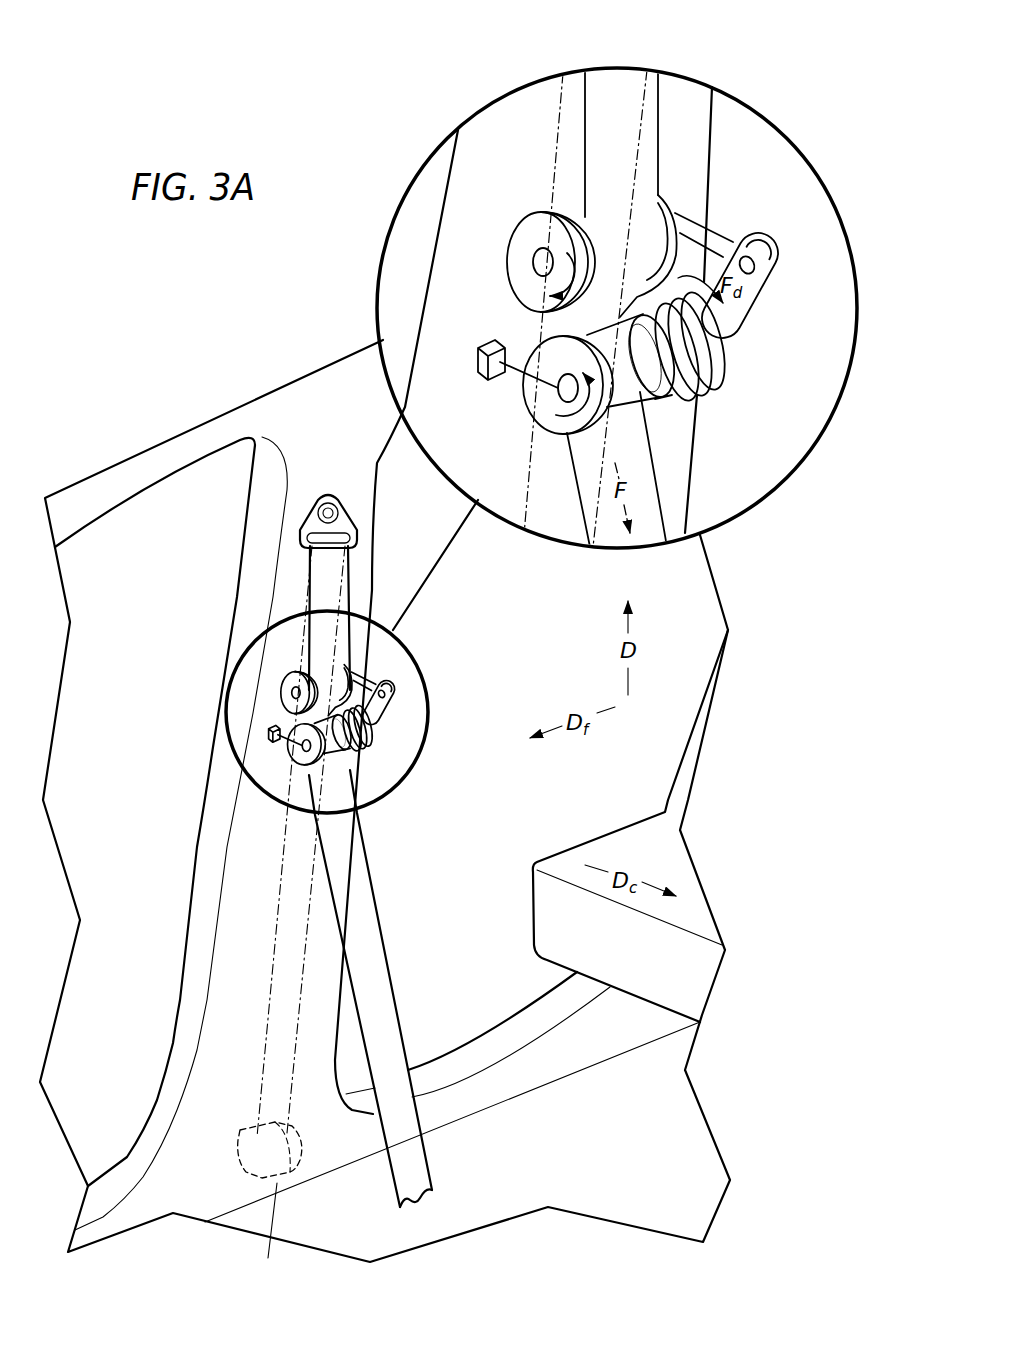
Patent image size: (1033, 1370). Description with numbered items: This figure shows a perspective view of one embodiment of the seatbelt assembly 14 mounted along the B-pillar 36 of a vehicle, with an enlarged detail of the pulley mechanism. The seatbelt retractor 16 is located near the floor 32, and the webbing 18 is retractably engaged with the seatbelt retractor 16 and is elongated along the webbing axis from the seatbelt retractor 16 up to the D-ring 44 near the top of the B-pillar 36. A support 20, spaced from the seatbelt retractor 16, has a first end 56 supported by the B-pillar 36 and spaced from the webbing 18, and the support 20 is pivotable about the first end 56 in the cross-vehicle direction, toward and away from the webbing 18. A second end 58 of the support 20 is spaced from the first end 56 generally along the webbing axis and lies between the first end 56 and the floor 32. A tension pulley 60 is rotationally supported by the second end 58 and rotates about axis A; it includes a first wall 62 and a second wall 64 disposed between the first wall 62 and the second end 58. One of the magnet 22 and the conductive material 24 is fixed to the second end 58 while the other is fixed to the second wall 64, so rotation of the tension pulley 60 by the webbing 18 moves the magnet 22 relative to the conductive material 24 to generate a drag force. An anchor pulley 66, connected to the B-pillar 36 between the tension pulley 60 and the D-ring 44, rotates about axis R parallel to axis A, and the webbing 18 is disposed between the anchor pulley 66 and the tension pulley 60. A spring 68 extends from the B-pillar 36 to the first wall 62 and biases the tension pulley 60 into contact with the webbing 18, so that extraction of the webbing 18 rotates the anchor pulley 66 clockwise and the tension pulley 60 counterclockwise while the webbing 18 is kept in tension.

The seatbelt assembly 14 is at (397, 574).
The seatbelt retractor 16 is at (293, 1173).
The webbing 18 is at (377, 982).
The support 20 is at (753, 230).
The magnet 22 is at (697, 397).
The conductive material 24 is at (720, 368).
The floor 32 is at (510, 1105).
The B-pillar 36 is at (248, 540).
The D-ring 44 is at (317, 497).
The first end 56 is at (767, 257).
The second end 58 is at (728, 340).
The tension pulley 60 is at (638, 402).
The first wall 62 is at (567, 417).
The second wall 64 is at (667, 400).
The anchor pulley 66 is at (524, 206).
The spring 68 is at (510, 380).